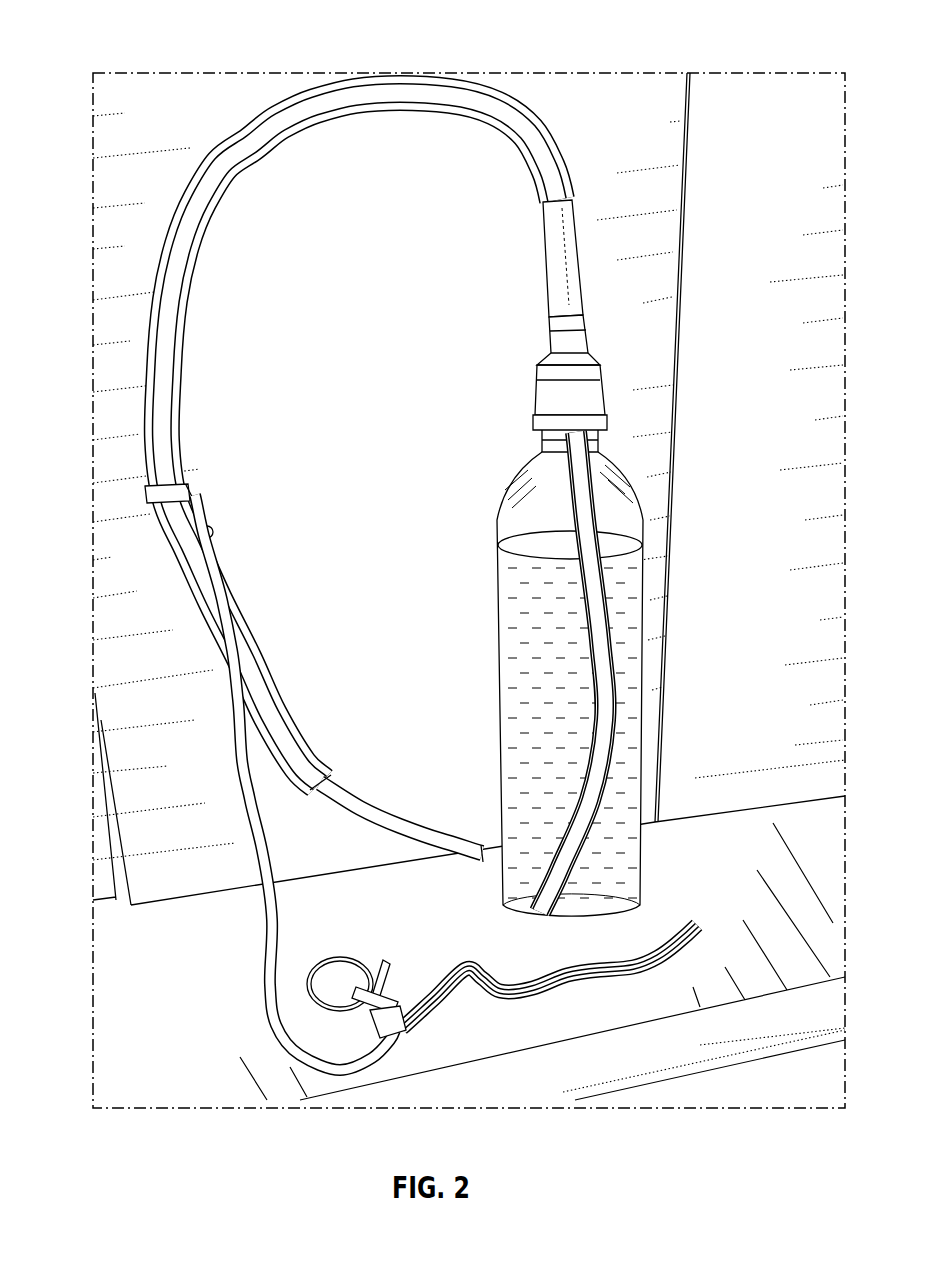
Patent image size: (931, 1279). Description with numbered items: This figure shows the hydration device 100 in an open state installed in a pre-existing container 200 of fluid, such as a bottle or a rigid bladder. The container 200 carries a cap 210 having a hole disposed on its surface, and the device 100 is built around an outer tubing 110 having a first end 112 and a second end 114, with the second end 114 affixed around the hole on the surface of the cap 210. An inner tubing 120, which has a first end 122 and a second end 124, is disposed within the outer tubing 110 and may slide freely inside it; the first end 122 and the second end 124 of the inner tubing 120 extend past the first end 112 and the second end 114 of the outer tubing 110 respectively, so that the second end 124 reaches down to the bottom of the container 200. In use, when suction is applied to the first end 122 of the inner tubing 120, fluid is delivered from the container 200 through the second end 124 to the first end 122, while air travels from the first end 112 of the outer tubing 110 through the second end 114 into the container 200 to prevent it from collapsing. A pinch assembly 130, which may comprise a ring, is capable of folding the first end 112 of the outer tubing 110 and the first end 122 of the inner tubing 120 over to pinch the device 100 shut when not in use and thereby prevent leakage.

The hydration device 100 is at (371, 544).
The outer tubing 110 is at (341, 118).
The first end of the outer tubing 112 is at (333, 773).
The second end of the outer tubing 114 is at (549, 317).
The inner tubing 120 is at (345, 810).
The first end of the inner tubing 122 is at (483, 848).
The second end of the inner tubing 124 is at (510, 903).
The pinch assembly 130 is at (263, 977).
The pre-existing container 200 is at (647, 530).
The cap 210 is at (603, 383).